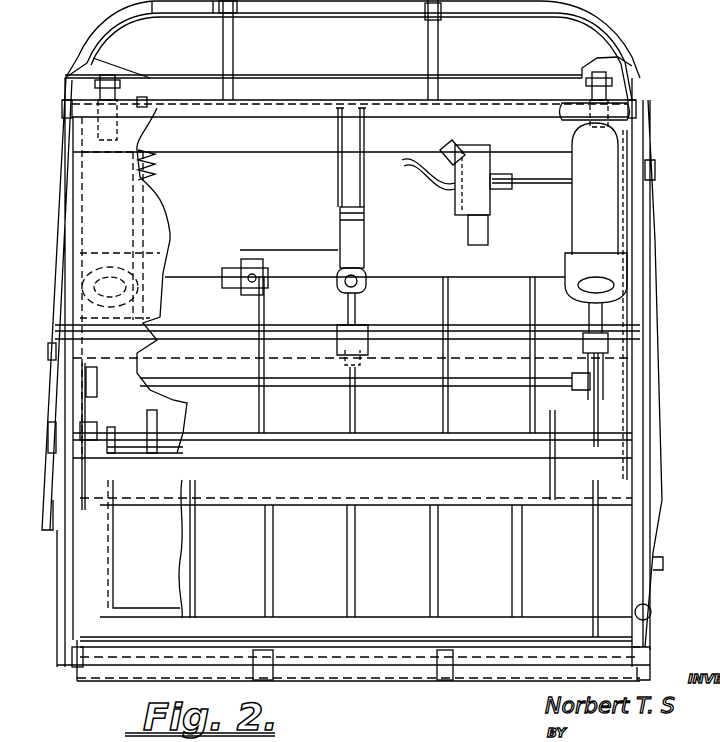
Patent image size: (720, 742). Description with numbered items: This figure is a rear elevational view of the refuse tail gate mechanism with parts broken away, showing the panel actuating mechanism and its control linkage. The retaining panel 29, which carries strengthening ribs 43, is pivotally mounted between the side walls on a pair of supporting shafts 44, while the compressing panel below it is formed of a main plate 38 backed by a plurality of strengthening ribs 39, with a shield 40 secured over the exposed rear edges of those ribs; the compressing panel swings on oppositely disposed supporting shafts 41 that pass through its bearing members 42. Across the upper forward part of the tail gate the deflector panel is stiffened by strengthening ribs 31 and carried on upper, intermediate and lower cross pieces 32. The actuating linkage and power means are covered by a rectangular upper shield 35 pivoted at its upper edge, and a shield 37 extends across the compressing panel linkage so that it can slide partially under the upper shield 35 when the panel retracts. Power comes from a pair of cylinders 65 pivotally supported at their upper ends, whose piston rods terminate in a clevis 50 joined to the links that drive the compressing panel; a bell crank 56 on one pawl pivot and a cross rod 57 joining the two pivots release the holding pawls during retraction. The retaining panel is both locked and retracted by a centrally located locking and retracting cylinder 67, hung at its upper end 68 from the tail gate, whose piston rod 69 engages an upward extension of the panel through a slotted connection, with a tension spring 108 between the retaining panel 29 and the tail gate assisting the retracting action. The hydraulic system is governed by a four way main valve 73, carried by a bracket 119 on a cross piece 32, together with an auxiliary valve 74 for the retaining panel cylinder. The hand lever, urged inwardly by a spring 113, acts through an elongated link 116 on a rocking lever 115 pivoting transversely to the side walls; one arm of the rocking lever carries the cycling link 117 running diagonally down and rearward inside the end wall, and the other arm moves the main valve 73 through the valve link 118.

The retaining panel 29 is at (320, 419).
The strengthening ribs 31 is at (263, 312).
The cross pieces 32 is at (296, 262).
The upper shield 35 is at (166, 225).
The shield 37 is at (182, 420).
The main plate 38 is at (212, 582).
The strengthening ribs 39 is at (433, 560).
The shield 40 is at (160, 544).
The supporting shafts 41 is at (48, 430).
The bearing members 42 is at (93, 422).
The strengthening ribs 43 is at (452, 404).
The supporting shafts 44 is at (48, 352).
The clevis 50 is at (290, 189).
The bell crank 56 is at (142, 99).
The cross rod 57 is at (393, 382).
The cylinders 65 is at (596, 285).
The locking and retracting cylinder 67 is at (367, 245).
The upper end 68 is at (348, 205).
The piston rod 69 is at (356, 302).
The main valve 73 is at (498, 208).
The auxiliary valve 74 is at (265, 261).
The tension spring 108 is at (157, 166).
The spring 113 is at (653, 551).
The rocking lever 115 is at (652, 163).
The elongated link 116 is at (660, 327).
The cycling link 117 is at (623, 223).
The valve link 118 is at (548, 177).
The bracket 119 is at (482, 235).